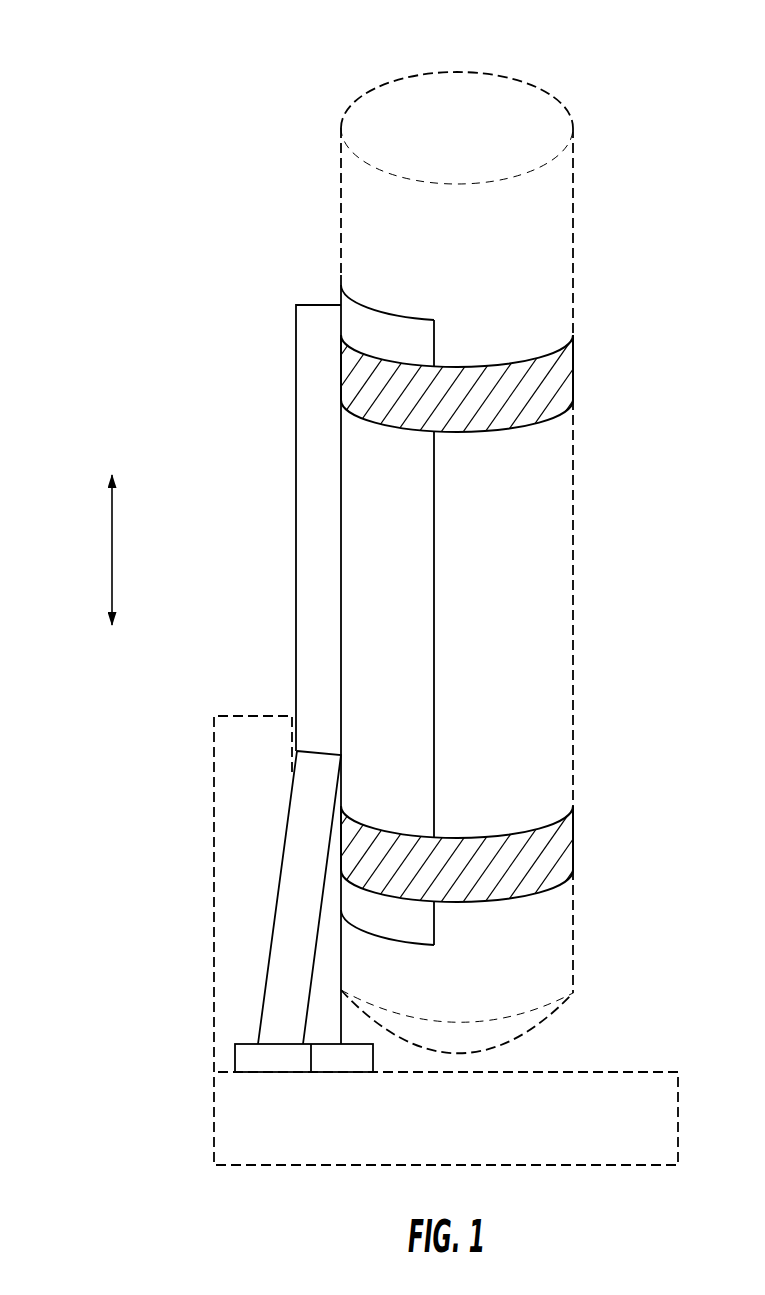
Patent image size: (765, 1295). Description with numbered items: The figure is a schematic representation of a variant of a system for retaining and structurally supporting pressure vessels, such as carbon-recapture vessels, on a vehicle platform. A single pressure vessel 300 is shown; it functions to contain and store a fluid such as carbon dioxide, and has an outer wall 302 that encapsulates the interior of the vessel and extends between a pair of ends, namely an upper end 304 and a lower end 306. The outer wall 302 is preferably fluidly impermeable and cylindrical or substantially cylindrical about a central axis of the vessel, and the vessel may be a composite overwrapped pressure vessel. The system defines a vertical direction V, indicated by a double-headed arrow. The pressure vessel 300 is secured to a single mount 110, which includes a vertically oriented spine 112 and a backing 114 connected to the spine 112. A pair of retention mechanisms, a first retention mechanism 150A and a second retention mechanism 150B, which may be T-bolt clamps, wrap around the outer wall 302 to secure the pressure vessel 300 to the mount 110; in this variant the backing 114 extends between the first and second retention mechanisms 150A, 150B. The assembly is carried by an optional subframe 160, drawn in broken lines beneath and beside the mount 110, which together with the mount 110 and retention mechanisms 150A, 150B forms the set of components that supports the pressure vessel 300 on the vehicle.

The mount 110 is at (310, 605).
The spine 112 is at (293, 500).
The backing 114 is at (397, 590).
The first retention mechanism 150A is at (575, 370).
The second retention mechanism 150B is at (575, 848).
The subframe 160 is at (195, 1090).
The pressure vessel 300 is at (475, 528).
The outer wall 302 is at (577, 612).
The upper end 304 is at (343, 117).
The lower end 306 is at (551, 1056).
The vertical direction V is at (110, 555).